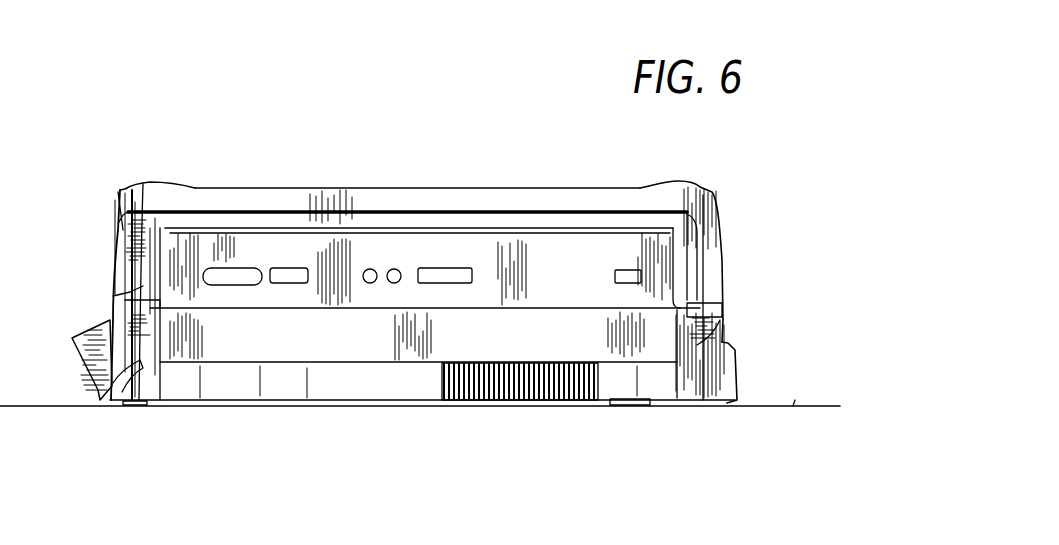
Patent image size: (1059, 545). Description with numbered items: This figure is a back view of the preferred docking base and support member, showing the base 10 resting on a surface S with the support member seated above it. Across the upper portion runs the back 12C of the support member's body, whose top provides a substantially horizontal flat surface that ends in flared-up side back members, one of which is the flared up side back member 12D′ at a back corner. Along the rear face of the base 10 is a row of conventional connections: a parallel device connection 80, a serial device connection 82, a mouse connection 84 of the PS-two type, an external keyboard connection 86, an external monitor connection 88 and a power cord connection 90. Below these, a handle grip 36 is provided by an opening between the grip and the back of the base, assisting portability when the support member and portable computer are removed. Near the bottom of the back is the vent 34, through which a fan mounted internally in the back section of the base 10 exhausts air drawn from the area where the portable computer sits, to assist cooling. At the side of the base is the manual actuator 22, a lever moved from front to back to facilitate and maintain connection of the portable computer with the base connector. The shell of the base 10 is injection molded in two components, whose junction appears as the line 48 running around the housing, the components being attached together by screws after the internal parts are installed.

The base 10 is at (200, 443).
The back 12C is at (403, 197).
The flared up side back member 12D′ is at (670, 176).
The manual actuator 22 is at (90, 336).
The vent 34 is at (513, 370).
The handle grip 36 is at (340, 343).
The line 48 is at (697, 314).
The parallel device connection 80 is at (237, 270).
The serial device connection 82 is at (290, 268).
The PS/2 mouse connection 84 is at (371, 268).
The external keyboard connection 86 is at (399, 268).
The external monitor connection 88 is at (457, 277).
The power cord connection 90 is at (632, 277).
The support surface S is at (420, 375).